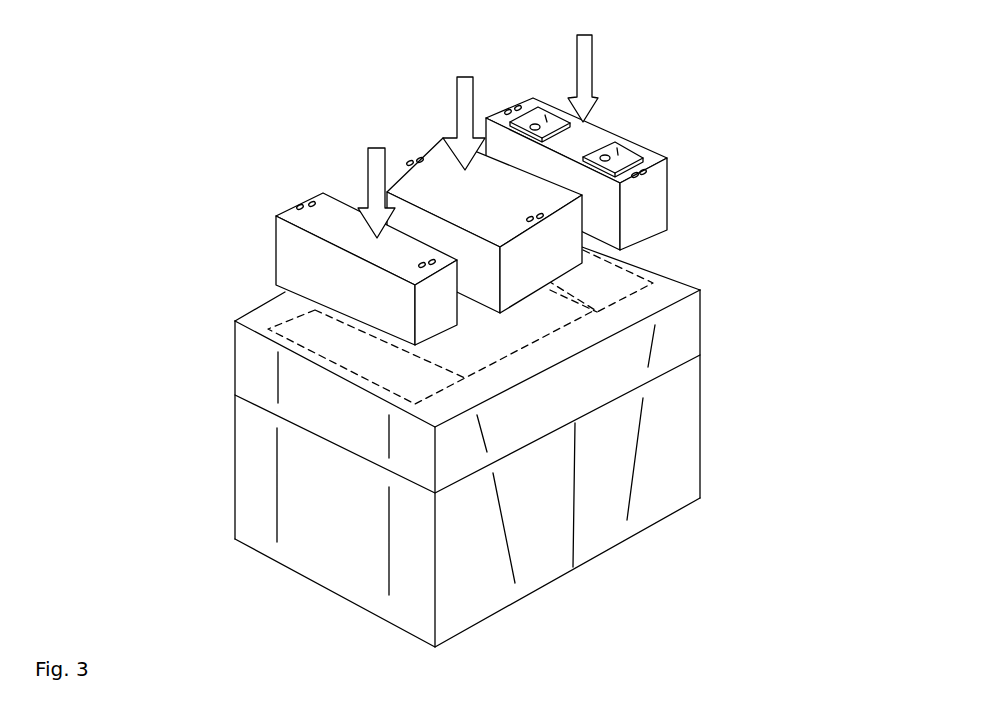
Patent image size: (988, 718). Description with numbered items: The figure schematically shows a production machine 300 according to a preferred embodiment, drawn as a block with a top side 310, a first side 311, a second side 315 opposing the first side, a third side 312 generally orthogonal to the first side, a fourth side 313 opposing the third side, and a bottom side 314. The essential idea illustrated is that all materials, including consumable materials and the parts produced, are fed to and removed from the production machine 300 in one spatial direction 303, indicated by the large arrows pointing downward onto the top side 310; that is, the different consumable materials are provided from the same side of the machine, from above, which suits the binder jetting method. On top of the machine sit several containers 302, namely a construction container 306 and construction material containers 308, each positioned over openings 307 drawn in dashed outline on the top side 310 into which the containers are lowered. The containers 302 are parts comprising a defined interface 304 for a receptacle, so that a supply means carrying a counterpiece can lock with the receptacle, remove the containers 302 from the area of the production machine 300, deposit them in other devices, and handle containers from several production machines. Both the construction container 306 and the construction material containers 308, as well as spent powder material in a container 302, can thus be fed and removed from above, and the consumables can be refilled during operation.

The production machine 300 is at (471, 470).
The container 302 is at (475, 211).
The spatial direction 303 is at (592, 50).
The interface 304 is at (645, 170).
The construction container 306 is at (478, 207).
The openings 307 is at (617, 272).
The construction material container 308 is at (475, 221).
The top side 310 is at (632, 317).
The first side 311 is at (668, 428).
The third side 312 is at (323, 518).
The fourth side 313 is at (703, 363).
The bottom side 314 is at (353, 605).
The second side 315 is at (230, 378).